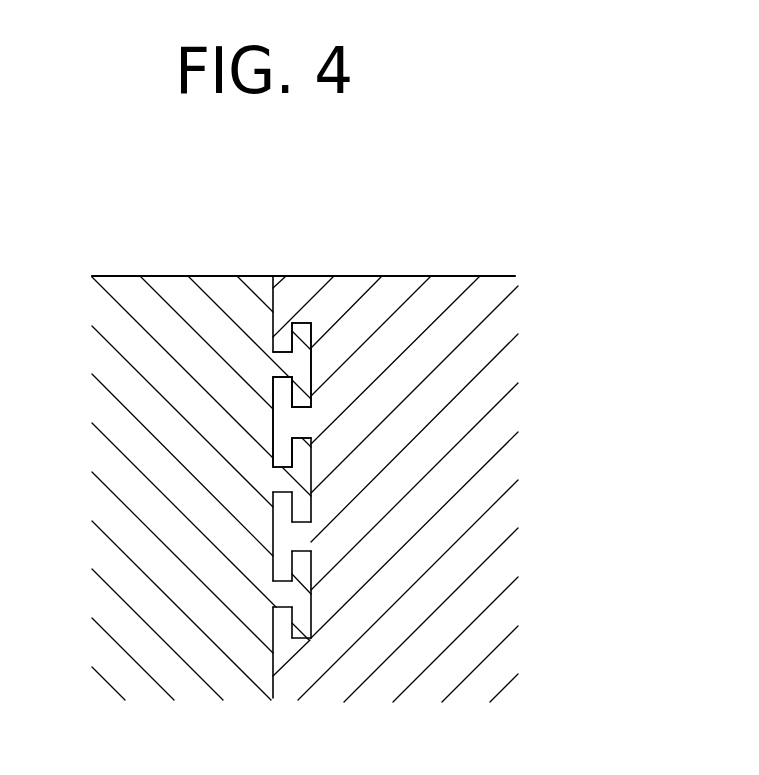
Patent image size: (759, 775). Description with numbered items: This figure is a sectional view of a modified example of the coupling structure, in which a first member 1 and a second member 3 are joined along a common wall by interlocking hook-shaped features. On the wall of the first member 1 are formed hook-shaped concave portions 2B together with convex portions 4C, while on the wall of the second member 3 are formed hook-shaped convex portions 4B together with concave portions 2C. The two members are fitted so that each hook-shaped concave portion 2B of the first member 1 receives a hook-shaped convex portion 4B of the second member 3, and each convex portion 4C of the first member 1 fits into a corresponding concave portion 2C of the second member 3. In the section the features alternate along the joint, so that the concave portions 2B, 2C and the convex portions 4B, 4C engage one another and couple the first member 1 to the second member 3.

The first member 1 is at (298, 300).
The second member 3 is at (234, 300).
The hook-shaped concave portion 2B is at (312, 348).
The concave portion 2C is at (283, 370).
The hook-shaped convex portion 4B is at (273, 439).
The convex portion 4C is at (288, 427).